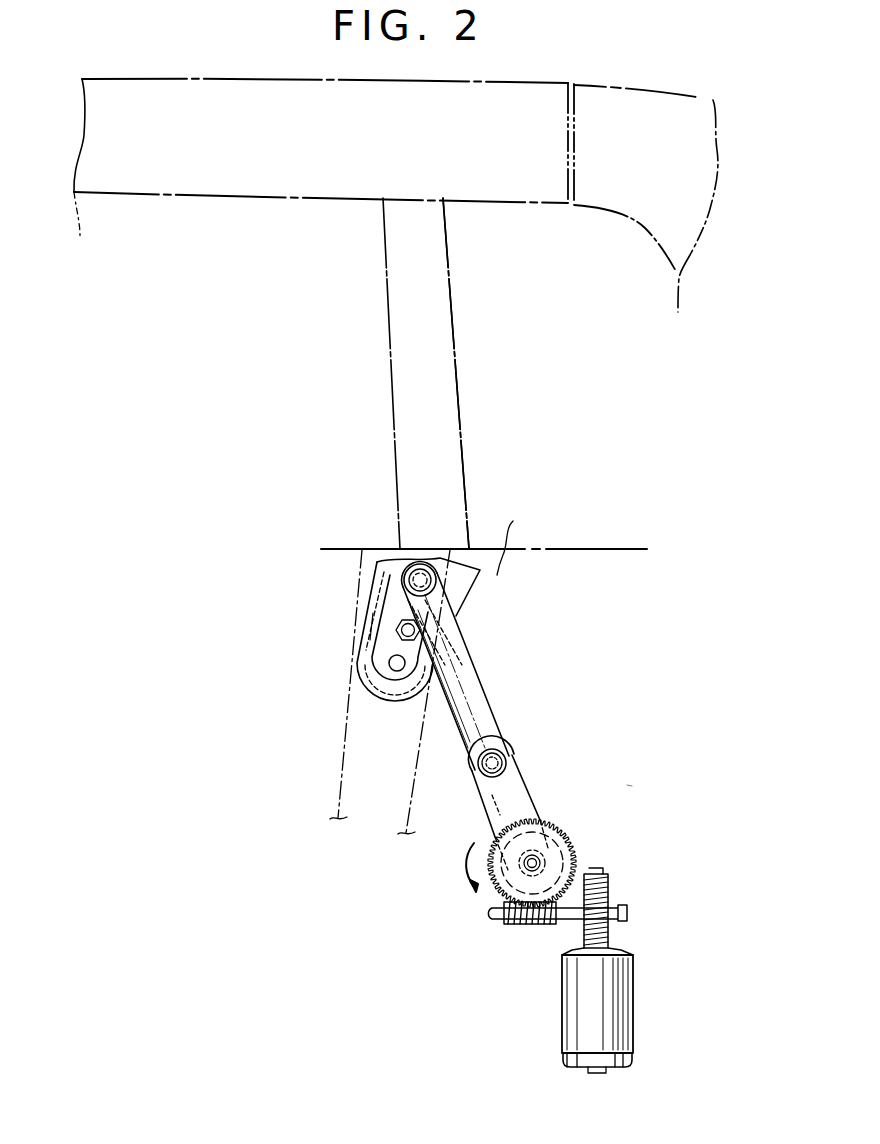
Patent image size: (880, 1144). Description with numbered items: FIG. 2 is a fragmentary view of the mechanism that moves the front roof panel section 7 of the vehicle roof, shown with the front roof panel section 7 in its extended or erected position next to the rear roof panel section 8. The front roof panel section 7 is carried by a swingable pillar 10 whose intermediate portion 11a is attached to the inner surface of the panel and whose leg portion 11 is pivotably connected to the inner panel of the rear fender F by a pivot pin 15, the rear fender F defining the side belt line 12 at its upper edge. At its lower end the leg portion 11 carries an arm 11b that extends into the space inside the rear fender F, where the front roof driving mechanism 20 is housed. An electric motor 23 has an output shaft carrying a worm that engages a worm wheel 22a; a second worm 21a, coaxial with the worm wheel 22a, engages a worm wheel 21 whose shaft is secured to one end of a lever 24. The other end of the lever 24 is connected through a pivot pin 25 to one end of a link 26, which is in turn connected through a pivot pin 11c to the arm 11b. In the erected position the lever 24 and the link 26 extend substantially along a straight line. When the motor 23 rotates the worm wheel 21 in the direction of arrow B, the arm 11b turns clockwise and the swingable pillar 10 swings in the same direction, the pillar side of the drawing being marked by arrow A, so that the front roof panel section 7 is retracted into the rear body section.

The front roof panel section 7 is at (527, 83).
The rear roof panel section 8 is at (651, 93).
The swingable pillar 10 is at (466, 473).
The leg portion 11 is at (462, 437).
The intermediate portion 11a is at (393, 547).
The arm 11b is at (393, 605).
The pivot pin 11c is at (421, 547).
The side belt line 12 is at (586, 548).
The pivot pin 15 is at (395, 675).
The tilt drive mechanism 20 is at (627, 785).
The worm wheel 21 is at (574, 843).
The second worm 21a is at (516, 924).
The worm wheel 22a is at (609, 876).
The electric motor 23 is at (634, 999).
The lever 24 is at (536, 800).
The pivot pin 25 is at (482, 770).
The link 26 is at (481, 683).
The tilt direction arrow A is at (270, 692).
The arrow B is at (472, 856).
The rear fender F is at (515, 538).